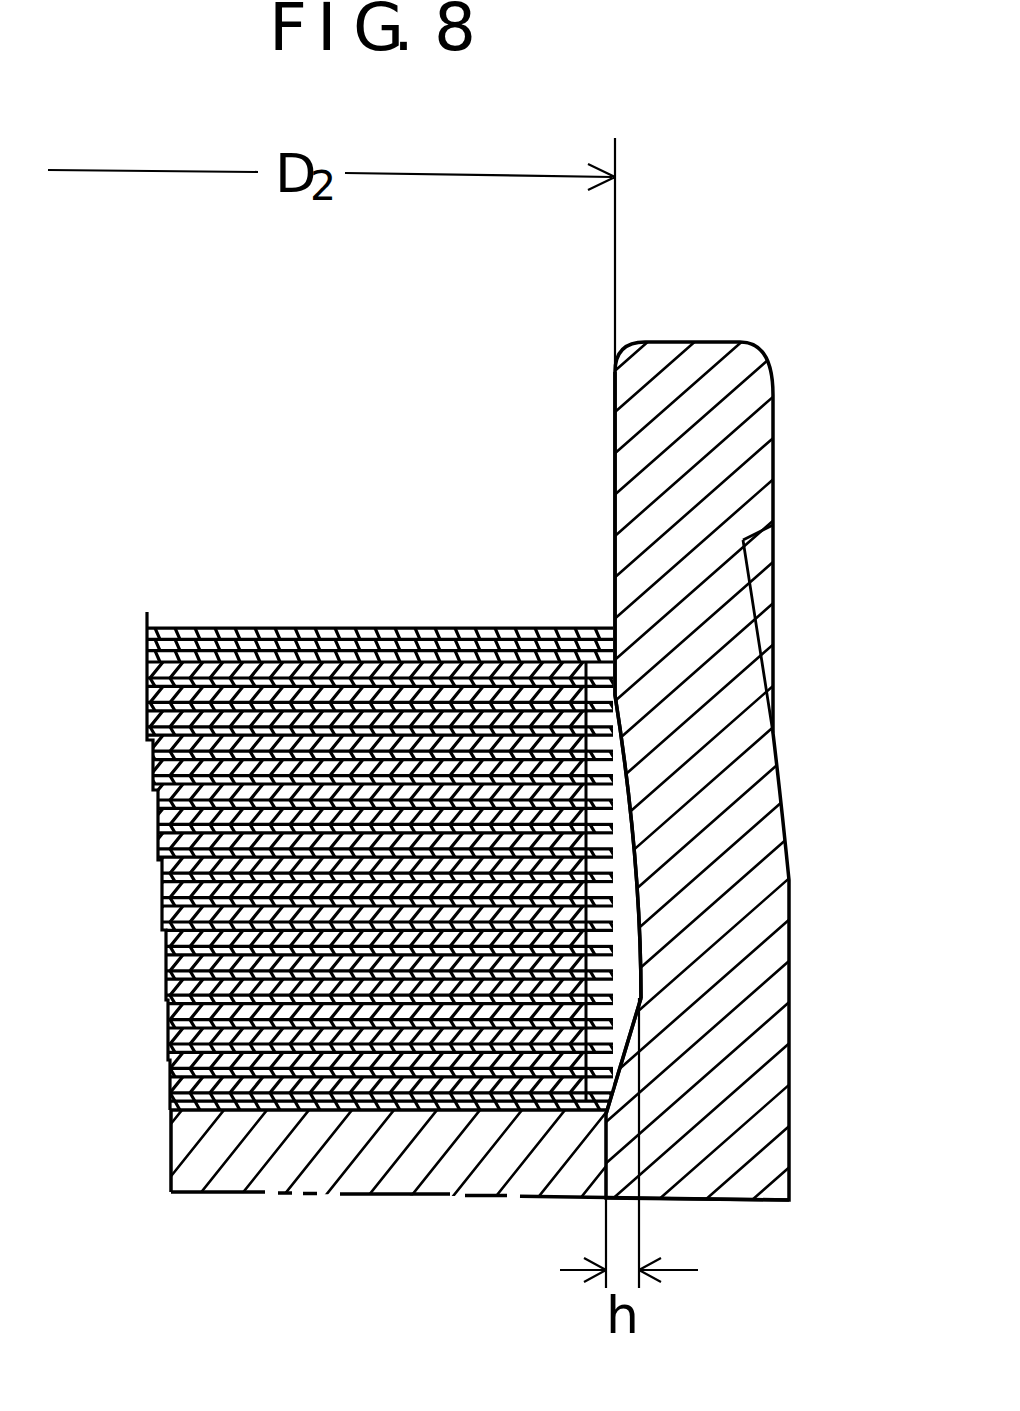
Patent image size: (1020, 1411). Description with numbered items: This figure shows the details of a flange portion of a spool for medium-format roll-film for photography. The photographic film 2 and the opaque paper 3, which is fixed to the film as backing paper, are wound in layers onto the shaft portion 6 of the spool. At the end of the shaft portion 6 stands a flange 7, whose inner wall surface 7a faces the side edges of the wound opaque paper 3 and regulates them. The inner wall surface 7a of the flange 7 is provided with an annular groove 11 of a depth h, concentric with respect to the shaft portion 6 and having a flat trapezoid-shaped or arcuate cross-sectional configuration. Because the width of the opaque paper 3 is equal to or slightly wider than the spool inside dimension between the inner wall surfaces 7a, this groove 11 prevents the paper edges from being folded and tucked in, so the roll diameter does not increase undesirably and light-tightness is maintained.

The photographic film 2 is at (227, 667).
The opaque paper 3 is at (313, 683).
The shaft portion 6 is at (225, 1175).
The flange 7 is at (695, 342).
The inner wall surface 7a is at (614, 542).
The annular groove 11 is at (635, 971).